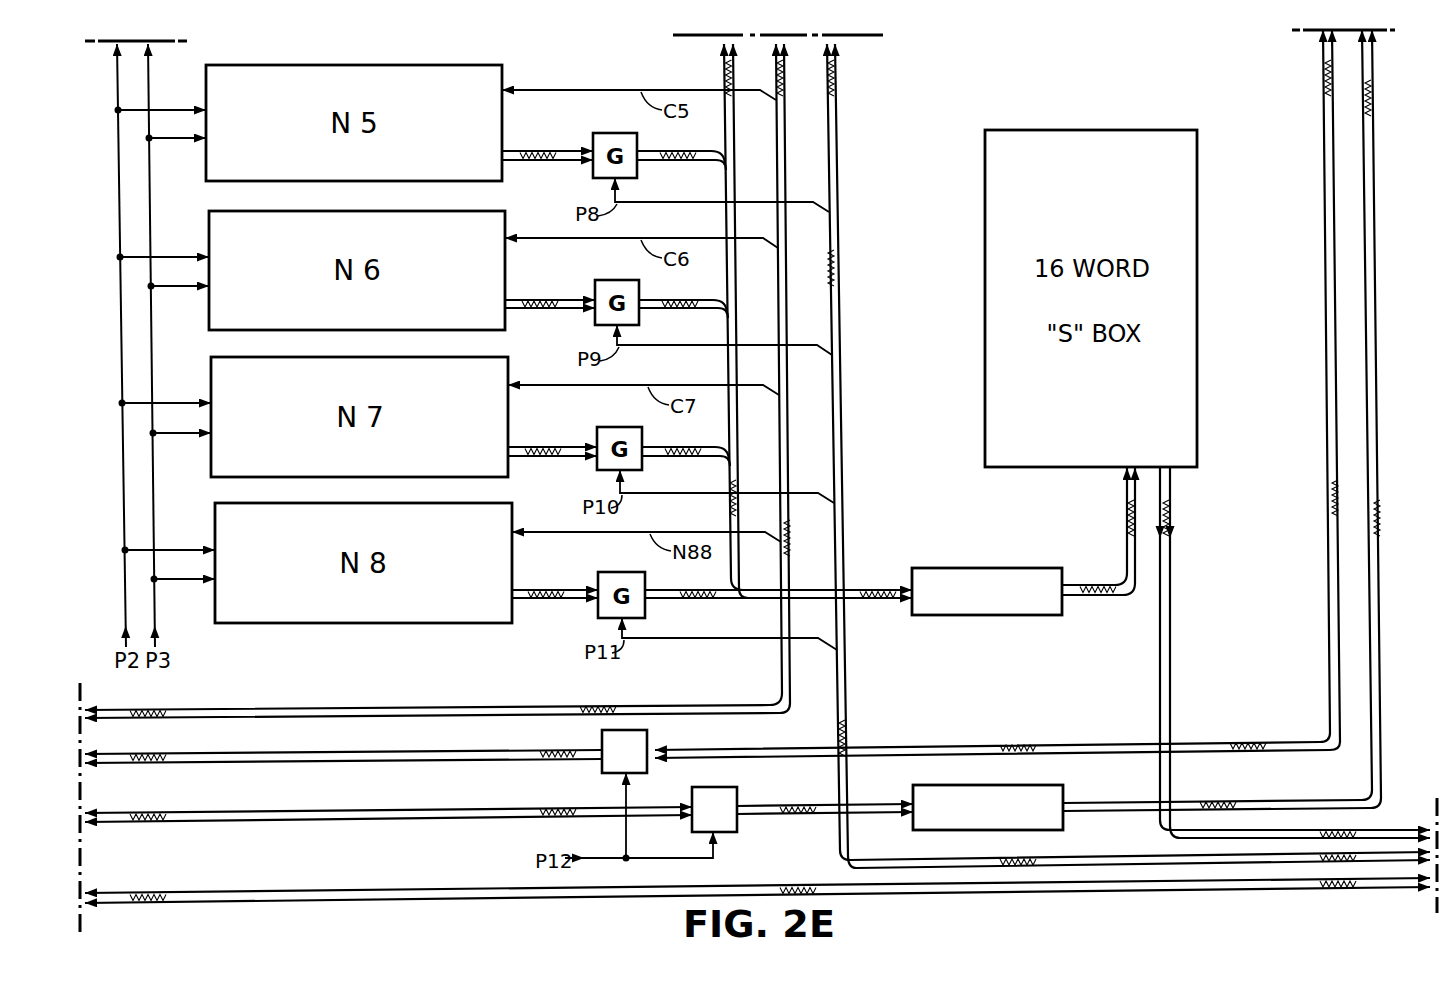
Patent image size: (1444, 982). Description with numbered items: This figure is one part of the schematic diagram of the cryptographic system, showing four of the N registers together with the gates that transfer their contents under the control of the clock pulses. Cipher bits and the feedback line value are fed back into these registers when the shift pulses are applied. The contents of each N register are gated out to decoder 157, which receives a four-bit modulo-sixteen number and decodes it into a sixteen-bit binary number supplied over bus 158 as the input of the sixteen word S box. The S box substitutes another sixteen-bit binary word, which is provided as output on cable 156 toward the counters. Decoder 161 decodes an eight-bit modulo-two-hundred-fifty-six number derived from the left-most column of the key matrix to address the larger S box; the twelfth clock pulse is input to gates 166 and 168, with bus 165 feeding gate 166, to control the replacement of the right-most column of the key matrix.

The cable 156 is at (1172, 510).
The decoder 157 is at (992, 568).
The decoder output bus to S box 158 is at (1126, 514).
The decoder 161 is at (1050, 785).
The input bus 165 is at (221, 812).
The gate 166 is at (738, 795).
The gate 168 is at (603, 768).